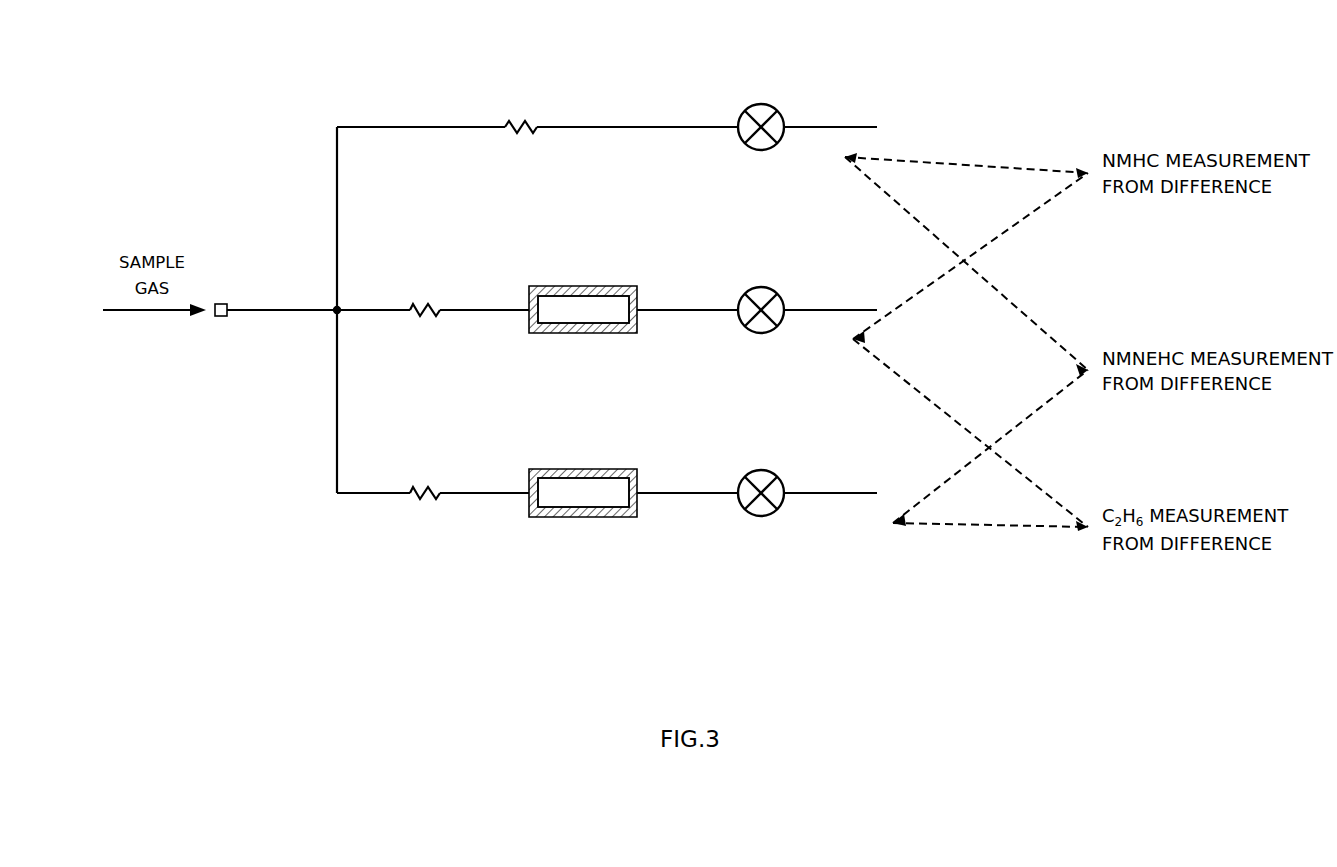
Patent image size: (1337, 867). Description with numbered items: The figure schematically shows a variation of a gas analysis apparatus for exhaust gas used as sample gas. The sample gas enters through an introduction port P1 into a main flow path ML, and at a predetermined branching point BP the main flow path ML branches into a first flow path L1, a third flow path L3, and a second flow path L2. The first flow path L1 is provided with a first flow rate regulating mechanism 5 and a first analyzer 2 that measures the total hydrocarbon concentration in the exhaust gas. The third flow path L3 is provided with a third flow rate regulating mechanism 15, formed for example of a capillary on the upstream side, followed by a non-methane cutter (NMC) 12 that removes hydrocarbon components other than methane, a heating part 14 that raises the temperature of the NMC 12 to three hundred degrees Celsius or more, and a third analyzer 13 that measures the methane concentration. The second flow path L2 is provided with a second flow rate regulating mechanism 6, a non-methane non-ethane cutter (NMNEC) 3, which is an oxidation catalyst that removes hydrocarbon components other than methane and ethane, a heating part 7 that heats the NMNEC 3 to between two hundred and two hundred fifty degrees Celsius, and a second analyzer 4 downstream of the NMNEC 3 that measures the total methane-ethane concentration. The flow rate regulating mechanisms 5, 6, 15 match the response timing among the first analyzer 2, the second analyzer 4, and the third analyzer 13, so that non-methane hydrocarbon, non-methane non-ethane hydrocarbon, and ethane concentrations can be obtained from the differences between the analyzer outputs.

The first analyzer 2 is at (761, 103).
The third analyzer 13 is at (762, 286).
The second analyzer 4 is at (761, 470).
The first flow rate regulating mechanism 5 is at (518, 122).
The third flow rate regulating mechanism 15 is at (424, 305).
The second flow rate regulating mechanism 6 is at (422, 488).
The non-methane cutter 12 is at (612, 290).
The heating part 14 is at (569, 285).
The non-methane non-ethane cutter 3 is at (605, 470).
The heating part 7 is at (563, 468).
The first flow path L1 is at (655, 124).
The second flow path L2 is at (702, 489).
The third flow path L3 is at (702, 306).
The main flow path ML is at (270, 308).
The branching point BP is at (332, 318).
The introduction port P1 is at (216, 320).